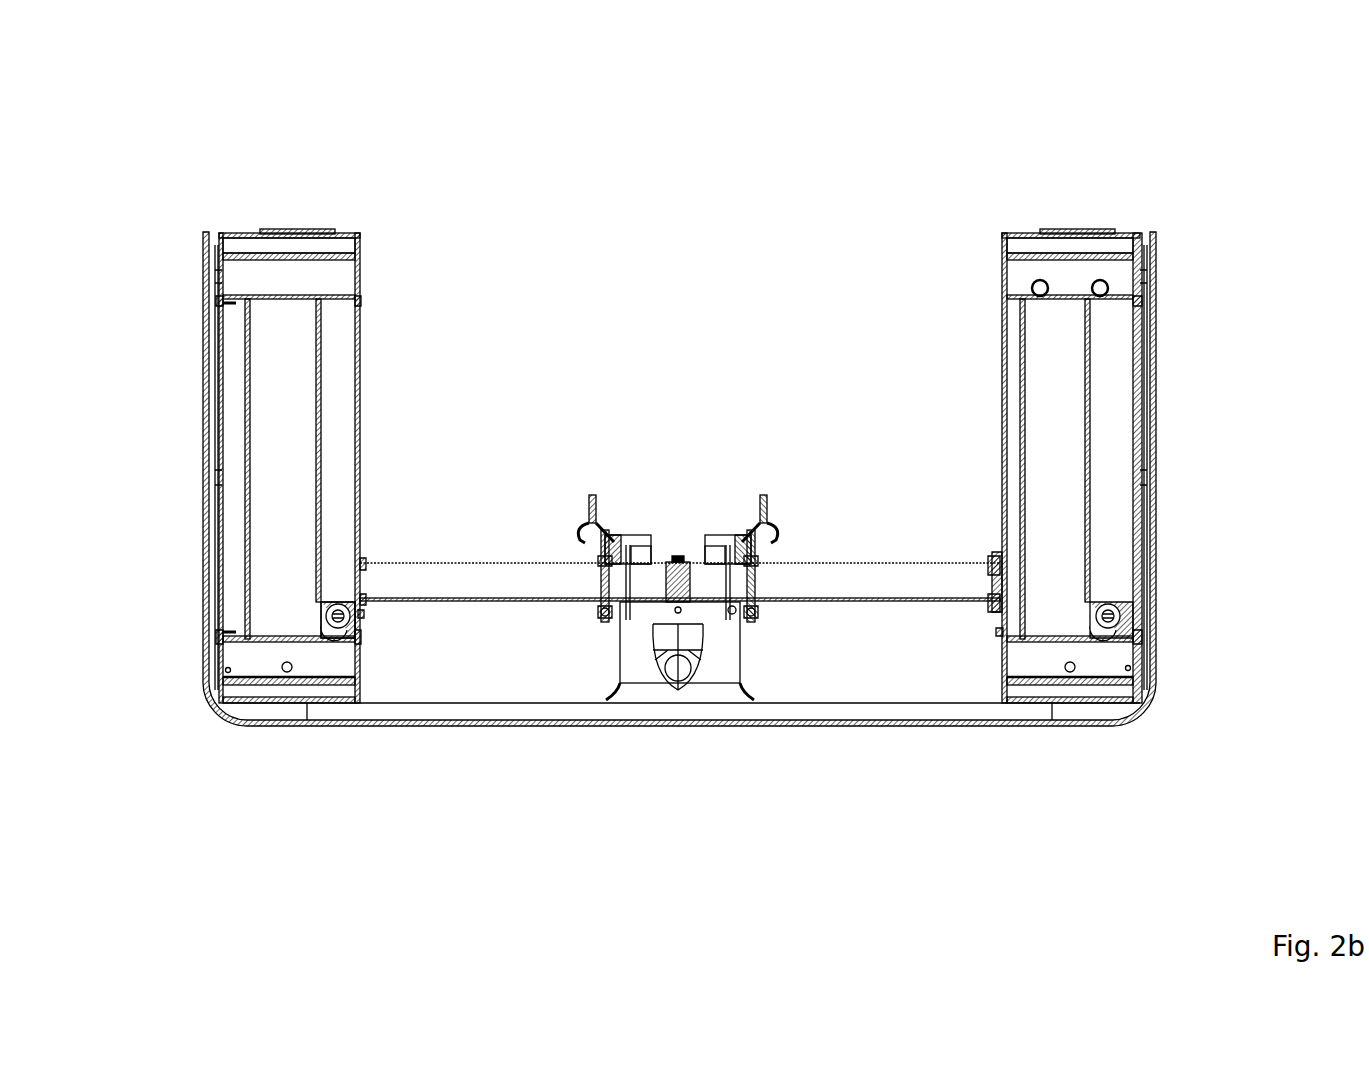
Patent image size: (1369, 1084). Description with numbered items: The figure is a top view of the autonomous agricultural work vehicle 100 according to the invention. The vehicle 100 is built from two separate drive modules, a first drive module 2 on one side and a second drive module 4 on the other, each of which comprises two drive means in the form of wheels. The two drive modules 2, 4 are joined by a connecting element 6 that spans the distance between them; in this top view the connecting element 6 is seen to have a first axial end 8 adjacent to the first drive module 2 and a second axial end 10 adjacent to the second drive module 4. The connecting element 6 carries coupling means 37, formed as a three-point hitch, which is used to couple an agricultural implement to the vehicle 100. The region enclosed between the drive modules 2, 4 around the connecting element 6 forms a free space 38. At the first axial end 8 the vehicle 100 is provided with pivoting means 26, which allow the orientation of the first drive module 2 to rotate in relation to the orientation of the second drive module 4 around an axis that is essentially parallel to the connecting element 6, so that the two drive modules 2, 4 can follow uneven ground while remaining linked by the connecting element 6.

The agricultural work vehicle 100 is at (166, 146).
The free space 38 is at (780, 220).
The second drive module 4 is at (340, 337).
The first drive module 2 is at (1118, 340).
The connecting element 6 is at (518, 578).
The second axial end of connecting element 10 is at (386, 580).
The first axial end of connecting element 8 is at (960, 582).
The pivoting means 26 is at (973, 548).
The coupling means 37 is at (674, 508).